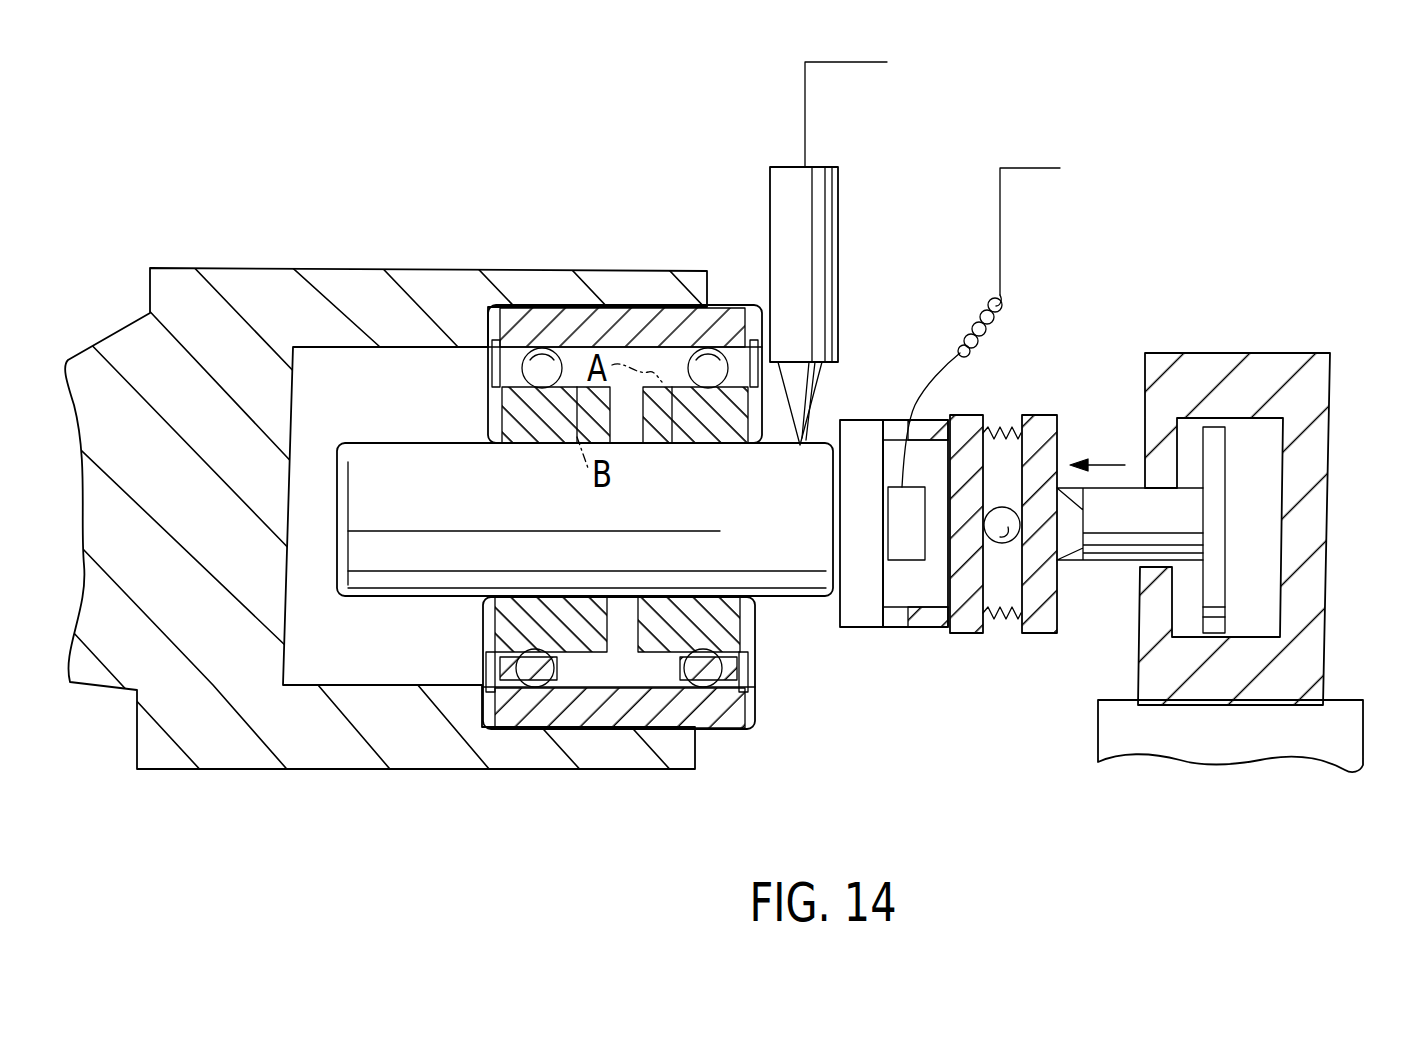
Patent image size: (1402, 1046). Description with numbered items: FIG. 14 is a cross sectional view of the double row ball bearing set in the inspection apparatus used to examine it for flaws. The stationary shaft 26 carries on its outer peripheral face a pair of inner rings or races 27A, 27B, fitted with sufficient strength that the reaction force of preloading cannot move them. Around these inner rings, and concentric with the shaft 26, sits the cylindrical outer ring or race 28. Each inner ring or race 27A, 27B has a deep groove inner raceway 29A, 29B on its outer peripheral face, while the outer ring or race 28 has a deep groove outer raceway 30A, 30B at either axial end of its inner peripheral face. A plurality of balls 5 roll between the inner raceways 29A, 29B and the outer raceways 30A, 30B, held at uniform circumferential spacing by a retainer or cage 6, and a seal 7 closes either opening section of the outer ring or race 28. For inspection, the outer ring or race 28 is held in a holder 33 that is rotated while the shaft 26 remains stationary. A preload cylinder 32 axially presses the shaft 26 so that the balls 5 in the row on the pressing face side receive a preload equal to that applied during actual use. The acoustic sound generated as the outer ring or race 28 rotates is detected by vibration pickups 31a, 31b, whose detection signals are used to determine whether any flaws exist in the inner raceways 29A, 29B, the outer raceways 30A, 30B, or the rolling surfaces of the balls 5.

The balls 5 is at (505, 335).
The retainer or cage 6 is at (492, 388).
The seal 7 is at (488, 664).
The shaft 26 is at (383, 445).
The inner ring or race 27A is at (498, 444).
The inner ring or race 27B is at (758, 628).
The outer ring or race 28 is at (603, 325).
The inner raceway 29A is at (545, 392).
The inner raceway 29B is at (690, 715).
The outer raceway 30A is at (540, 350).
The outer raceway 30B is at (724, 345).
The vibration pickup 31a is at (897, 560).
The vibration pickup 31b is at (842, 240).
The preload cylinder 32 is at (1326, 514).
The holder 33 is at (287, 284).